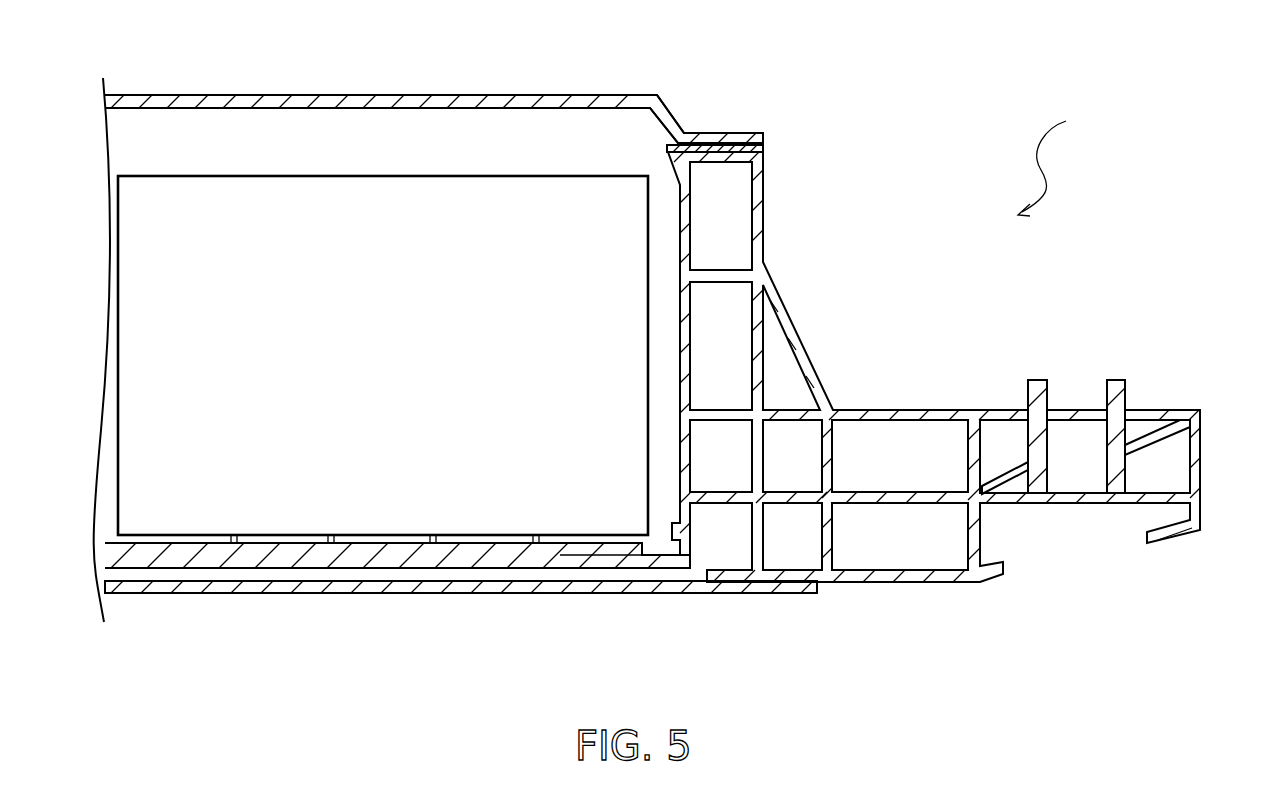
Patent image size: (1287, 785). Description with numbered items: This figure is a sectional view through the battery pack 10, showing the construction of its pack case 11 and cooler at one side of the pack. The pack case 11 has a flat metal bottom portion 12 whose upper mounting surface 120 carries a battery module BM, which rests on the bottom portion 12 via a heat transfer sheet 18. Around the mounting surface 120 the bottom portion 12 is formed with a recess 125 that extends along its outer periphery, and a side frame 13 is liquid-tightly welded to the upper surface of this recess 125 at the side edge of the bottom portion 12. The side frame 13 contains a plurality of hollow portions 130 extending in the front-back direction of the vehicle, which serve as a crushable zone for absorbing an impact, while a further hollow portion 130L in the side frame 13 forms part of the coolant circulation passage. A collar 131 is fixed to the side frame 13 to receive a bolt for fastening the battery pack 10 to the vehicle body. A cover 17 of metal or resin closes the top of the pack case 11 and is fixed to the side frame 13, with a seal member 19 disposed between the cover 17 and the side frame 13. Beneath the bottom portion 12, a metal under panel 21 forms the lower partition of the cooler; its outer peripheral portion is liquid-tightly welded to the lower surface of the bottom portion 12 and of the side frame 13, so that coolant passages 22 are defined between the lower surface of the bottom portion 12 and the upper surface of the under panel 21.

The battery pack 10 is at (1059, 159).
The pack case 11 is at (690, 122).
The bottom portion 12 is at (566, 556).
The side frame 13 is at (840, 398).
The cover 17 is at (237, 93).
The heat transfer sheet 18 is at (476, 552).
The seal member 19 is at (768, 147).
The under panel 21 is at (253, 588).
The coolant passage 22 is at (181, 572).
The mounting surface 120 is at (373, 548).
The recess 125 is at (663, 560).
The hollow portion 130 is at (745, 227).
The hollow portion 130L is at (721, 538).
The collar 131 is at (1122, 378).
The battery module BM is at (384, 188).